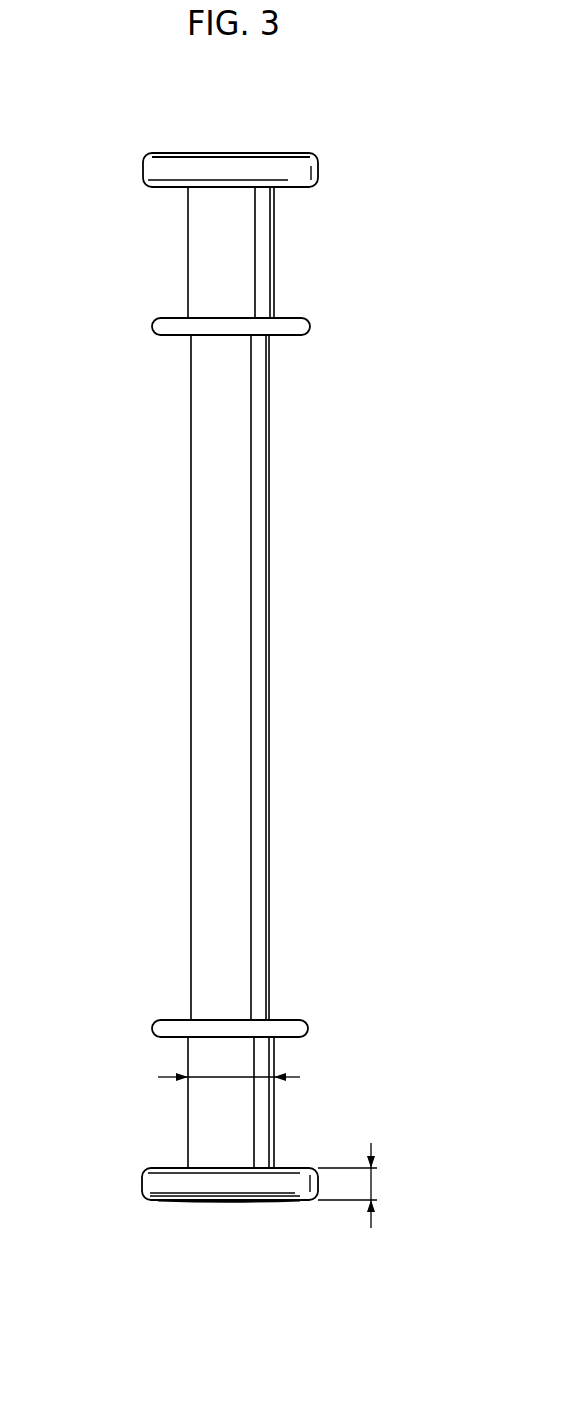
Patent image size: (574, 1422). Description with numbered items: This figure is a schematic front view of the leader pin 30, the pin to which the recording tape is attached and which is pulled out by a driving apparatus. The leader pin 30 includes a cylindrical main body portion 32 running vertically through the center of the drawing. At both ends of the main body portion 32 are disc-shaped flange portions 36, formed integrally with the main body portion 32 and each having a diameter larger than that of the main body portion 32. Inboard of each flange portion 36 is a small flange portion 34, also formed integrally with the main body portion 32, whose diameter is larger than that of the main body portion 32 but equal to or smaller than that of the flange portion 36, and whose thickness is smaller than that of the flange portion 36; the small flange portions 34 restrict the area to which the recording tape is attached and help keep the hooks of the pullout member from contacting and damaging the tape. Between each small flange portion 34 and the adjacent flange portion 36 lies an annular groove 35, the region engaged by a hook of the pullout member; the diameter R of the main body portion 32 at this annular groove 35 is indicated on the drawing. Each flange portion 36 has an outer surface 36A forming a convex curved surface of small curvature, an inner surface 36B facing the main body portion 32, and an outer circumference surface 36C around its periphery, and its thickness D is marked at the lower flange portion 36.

The leader pin 30 is at (398, 159).
The main body portion 32 is at (204, 662).
The small flange portion 34 is at (155, 325).
The annular groove 35 is at (187, 252).
The flange portion 36 is at (176, 152).
The outer surface 36A is at (230, 152).
The inner surface 36B is at (291, 189).
The outer circumference surface 36C is at (152, 168).
The diameter R is at (230, 1077).
The thickness D is at (373, 1185).